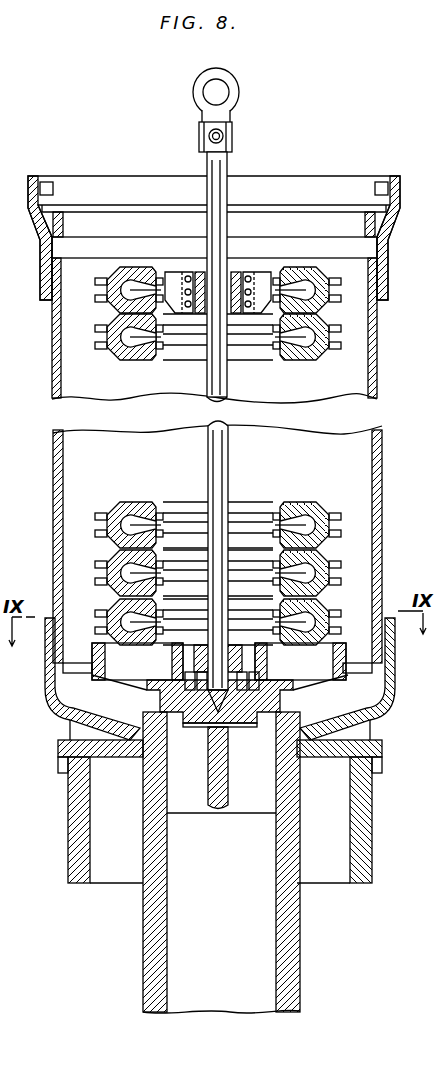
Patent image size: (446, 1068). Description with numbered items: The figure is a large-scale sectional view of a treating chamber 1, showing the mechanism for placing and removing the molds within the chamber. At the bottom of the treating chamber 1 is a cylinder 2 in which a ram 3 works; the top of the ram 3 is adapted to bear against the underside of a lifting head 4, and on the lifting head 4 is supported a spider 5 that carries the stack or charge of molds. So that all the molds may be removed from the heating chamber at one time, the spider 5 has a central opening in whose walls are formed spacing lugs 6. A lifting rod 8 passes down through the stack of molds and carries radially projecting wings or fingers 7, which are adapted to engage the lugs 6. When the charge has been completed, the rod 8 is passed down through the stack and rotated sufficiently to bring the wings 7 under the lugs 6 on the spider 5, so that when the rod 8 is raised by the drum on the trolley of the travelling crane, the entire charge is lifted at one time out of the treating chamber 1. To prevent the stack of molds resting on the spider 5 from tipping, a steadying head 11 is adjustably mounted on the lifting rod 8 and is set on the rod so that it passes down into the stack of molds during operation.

The housing 1 is at (52, 481).
The cylinder 2 is at (300, 938).
The ram 3 is at (221, 862).
The lifting head 4 is at (155, 700).
The spider 5 is at (328, 685).
The spacing lugs 6 is at (257, 657).
The wings 7 is at (250, 727).
The lifting rod 8 is at (215, 166).
The steadying head 11 is at (253, 278).